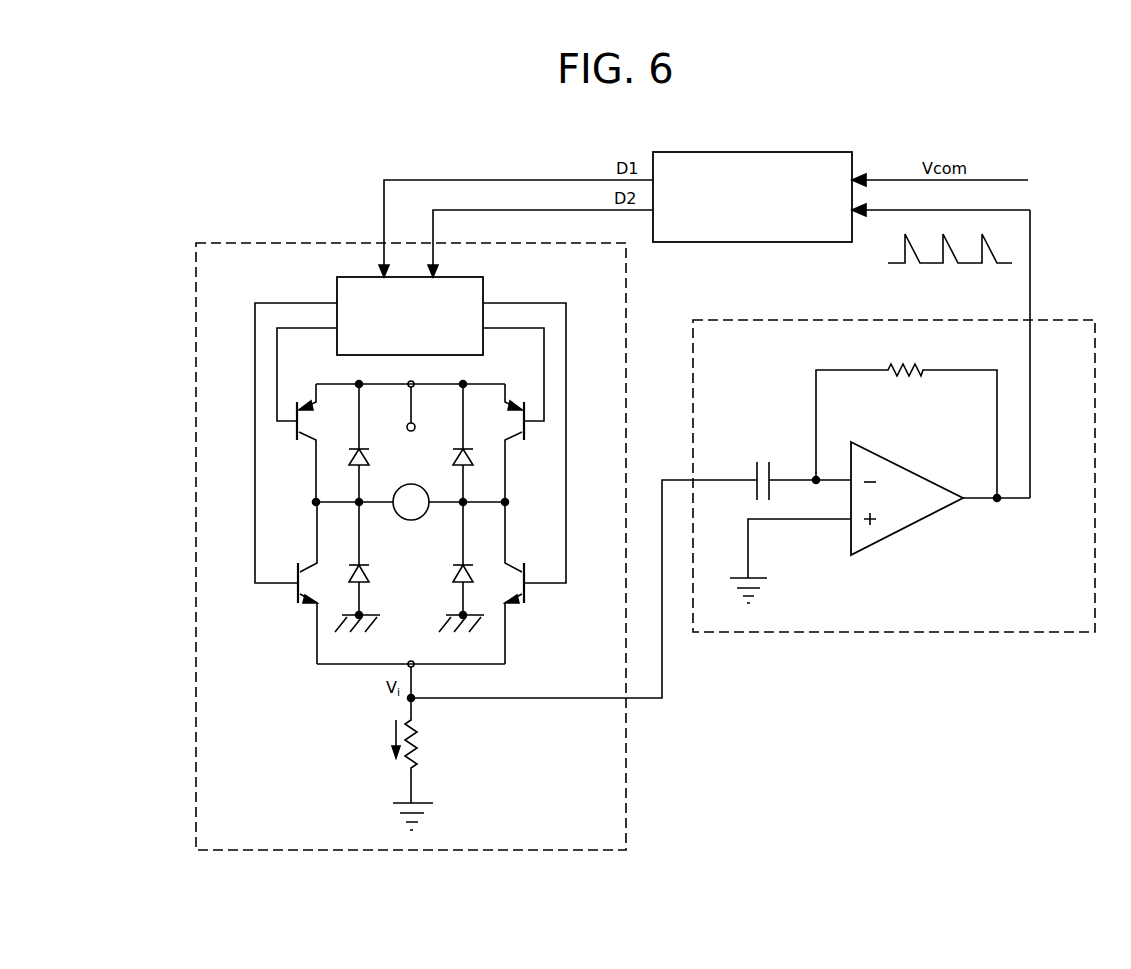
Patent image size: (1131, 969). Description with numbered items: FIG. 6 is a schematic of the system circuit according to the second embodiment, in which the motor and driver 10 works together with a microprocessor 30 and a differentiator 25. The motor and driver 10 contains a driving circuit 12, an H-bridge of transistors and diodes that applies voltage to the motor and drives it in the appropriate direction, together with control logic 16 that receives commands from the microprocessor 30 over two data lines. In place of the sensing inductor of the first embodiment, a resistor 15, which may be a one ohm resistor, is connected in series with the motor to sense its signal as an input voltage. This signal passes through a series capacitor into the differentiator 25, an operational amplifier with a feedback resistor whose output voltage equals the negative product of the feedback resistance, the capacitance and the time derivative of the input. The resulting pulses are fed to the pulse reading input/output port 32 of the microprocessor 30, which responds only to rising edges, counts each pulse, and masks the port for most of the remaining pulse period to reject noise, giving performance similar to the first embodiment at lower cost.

The motor and driver 10 is at (196, 545).
The driving circuit 12 is at (317, 645).
The resistor 15 is at (427, 765).
The control logic 16 is at (483, 292).
The differentiator 25 is at (897, 632).
The microprocessor 30 is at (752, 152).
The pulse reading input/output port 32 is at (856, 214).